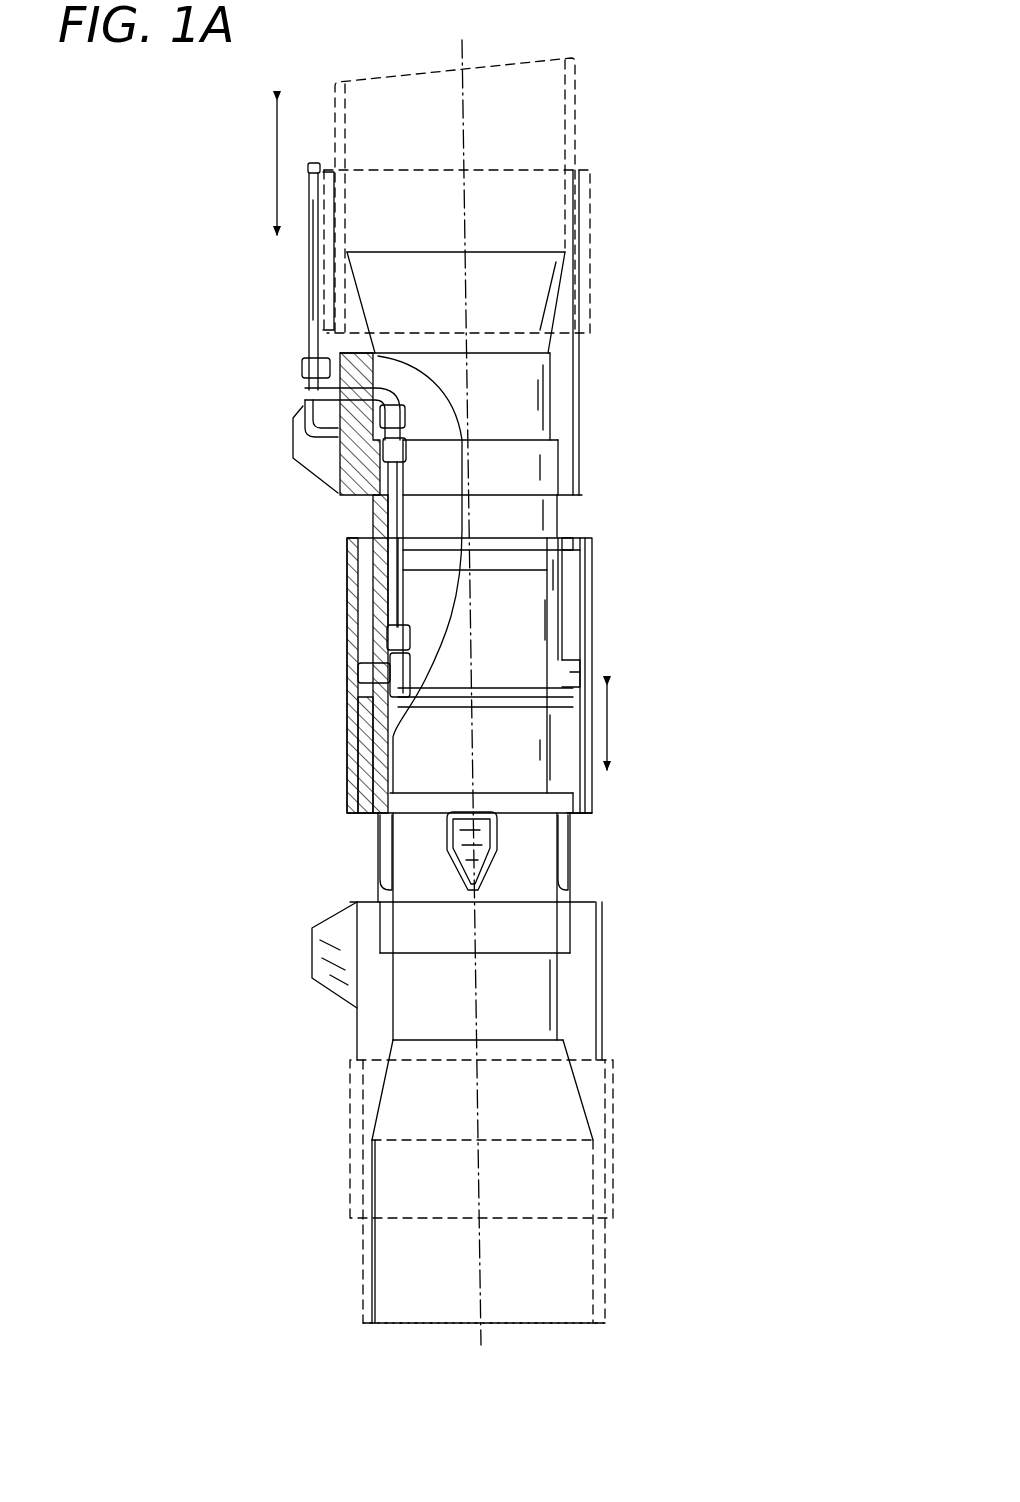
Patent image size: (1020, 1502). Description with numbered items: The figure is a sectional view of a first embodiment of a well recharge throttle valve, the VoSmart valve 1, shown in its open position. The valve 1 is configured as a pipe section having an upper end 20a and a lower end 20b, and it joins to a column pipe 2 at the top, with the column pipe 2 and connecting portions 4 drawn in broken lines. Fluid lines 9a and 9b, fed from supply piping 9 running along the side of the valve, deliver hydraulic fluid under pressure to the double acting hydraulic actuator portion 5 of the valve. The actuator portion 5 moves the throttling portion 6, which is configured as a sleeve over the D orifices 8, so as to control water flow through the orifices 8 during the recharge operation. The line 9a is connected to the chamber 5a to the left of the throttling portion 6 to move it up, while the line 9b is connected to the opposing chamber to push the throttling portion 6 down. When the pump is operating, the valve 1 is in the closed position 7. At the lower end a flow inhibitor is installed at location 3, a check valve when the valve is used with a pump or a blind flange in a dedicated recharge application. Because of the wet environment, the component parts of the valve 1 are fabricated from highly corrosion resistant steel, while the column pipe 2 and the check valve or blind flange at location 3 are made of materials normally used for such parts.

The VoSmart valve 1 is at (562, 408).
The column pipe 2 is at (577, 137).
The check valve or blind flange location 3 is at (598, 1300).
The connecting duct 4 is at (590, 270).
The double acting hydraulic actuator portion 5 is at (347, 575).
The chamber 5a is at (360, 605).
The throttling portion 6 is at (585, 802).
The closed position 7 is at (597, 883).
The D orifices 8 is at (382, 875).
The supply rod 9 is at (308, 177).
The fluid line 9a is at (410, 635).
The fluid line 9b is at (410, 678).
The upper end 20a is at (590, 172).
The lower end 20b is at (605, 1212).